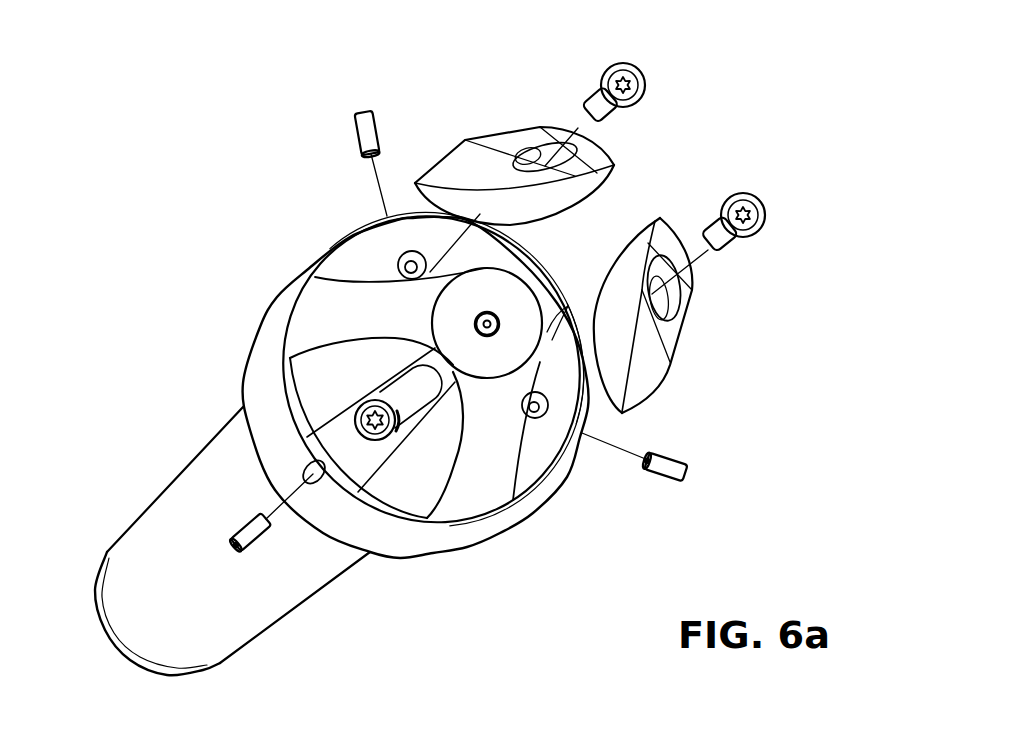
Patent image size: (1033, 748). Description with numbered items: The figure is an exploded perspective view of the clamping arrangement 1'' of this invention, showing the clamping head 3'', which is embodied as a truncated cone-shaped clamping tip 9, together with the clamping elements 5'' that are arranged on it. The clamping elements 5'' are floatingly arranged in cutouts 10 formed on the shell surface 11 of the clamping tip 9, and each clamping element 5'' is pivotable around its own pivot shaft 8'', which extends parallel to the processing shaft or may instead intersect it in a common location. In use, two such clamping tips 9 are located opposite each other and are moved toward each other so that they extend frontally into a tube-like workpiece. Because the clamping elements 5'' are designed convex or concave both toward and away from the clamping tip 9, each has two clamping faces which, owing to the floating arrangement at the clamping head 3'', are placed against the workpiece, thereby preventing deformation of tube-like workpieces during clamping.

The clamping arrangement 1'' is at (228, 392).
The clamping head 3'' is at (417, 352).
The clamping elements 5'' is at (465, 287).
The pivot shafts 8'' is at (611, 222).
The clamping tip 9 is at (330, 328).
The cutouts 10 is at (365, 262).
The shell surface 11 is at (476, 497).